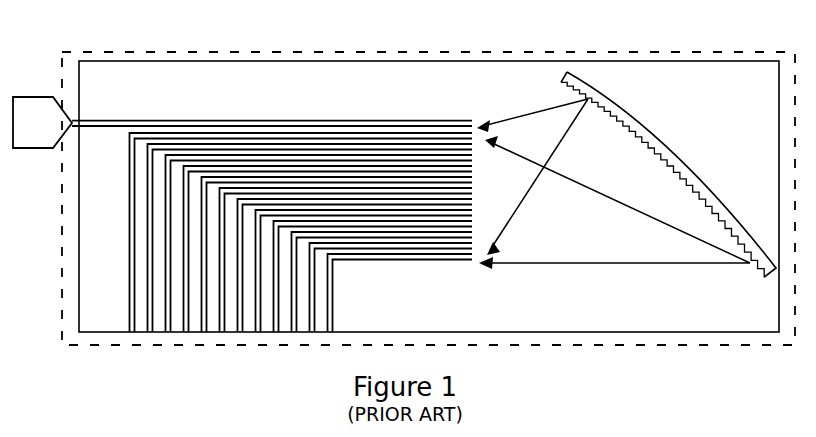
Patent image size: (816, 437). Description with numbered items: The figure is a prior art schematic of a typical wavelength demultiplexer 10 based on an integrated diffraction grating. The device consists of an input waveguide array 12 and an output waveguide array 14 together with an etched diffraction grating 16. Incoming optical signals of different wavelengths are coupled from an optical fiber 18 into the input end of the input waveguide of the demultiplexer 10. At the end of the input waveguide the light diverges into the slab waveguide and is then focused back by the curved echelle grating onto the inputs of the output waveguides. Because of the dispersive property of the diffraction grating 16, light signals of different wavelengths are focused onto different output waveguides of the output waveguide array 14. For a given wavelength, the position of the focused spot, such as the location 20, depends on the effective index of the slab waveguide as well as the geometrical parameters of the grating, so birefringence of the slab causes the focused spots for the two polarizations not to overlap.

The wavelength demultiplexer 10 is at (795, 62).
The input waveguide array 12 is at (107, 120).
The output waveguide array 14 is at (478, 266).
The etched diffraction grating 16 is at (647, 118).
The optical fiber 18 is at (31, 97).
The location of focused spot 20 is at (375, 172).